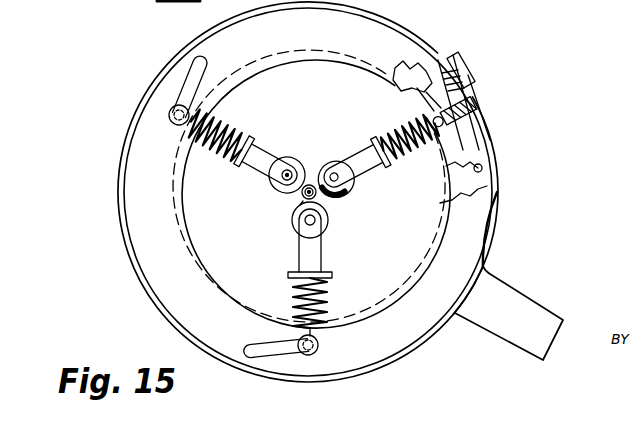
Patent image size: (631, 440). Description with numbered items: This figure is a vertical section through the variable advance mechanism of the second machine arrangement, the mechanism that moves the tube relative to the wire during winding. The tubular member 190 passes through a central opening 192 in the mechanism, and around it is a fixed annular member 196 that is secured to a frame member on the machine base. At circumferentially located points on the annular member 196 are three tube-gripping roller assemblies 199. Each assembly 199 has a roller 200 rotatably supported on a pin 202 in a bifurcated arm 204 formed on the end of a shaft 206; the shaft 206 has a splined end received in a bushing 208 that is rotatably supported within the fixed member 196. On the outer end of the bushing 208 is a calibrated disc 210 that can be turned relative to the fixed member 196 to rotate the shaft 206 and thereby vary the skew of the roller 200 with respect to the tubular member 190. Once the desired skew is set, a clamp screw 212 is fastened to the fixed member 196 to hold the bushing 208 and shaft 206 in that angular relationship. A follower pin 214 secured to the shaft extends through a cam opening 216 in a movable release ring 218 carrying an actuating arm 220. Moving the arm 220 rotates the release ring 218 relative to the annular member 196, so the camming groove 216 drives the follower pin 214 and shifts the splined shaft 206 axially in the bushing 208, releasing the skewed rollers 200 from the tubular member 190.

The tubular member 190 is at (301, 193).
The central opening 192 is at (300, 205).
The annular member 196 is at (418, 33).
The tube-gripping roller assembly 199 is at (362, 183).
The roller 200 is at (340, 197).
The pin 202 is at (303, 165).
The bifurcated arm 204 is at (352, 158).
The shaft 206 is at (398, 142).
The bushing 208 is at (407, 68).
The calibrated disc 210 is at (463, 90).
The clamp screw 212 is at (460, 62).
The follower pin 214 is at (480, 123).
The cam opening 216 is at (188, 76).
The release ring 218 is at (480, 212).
The actuating arm 220 is at (548, 320).